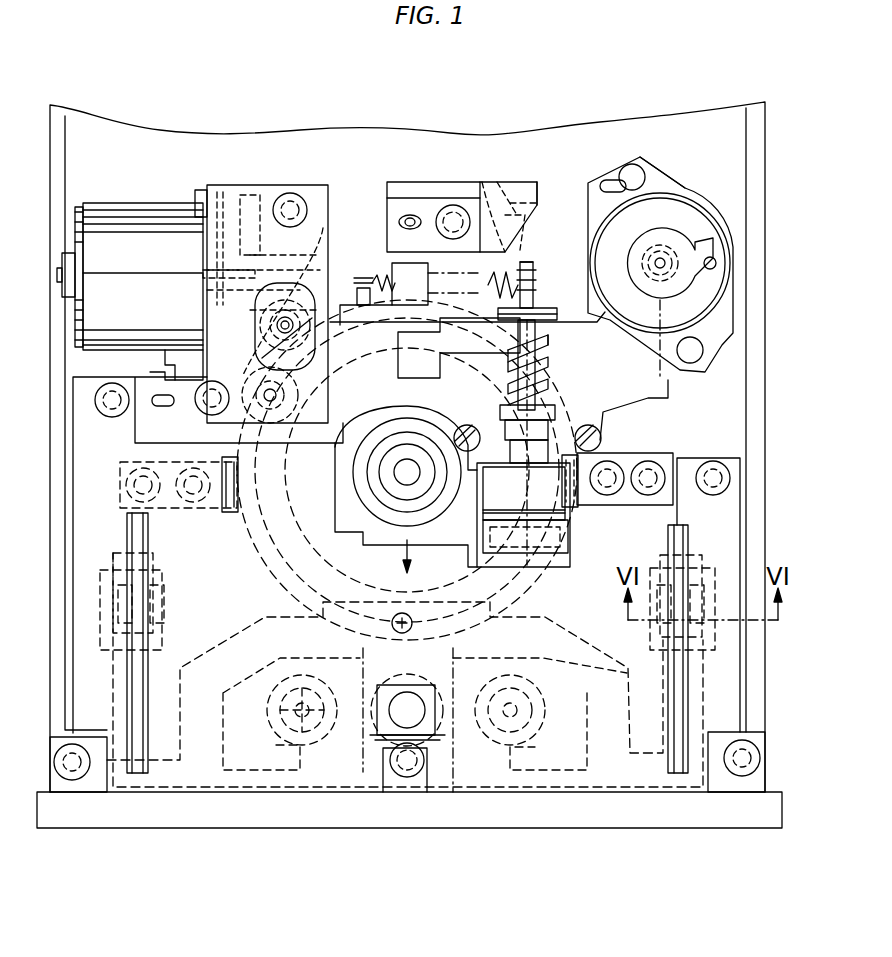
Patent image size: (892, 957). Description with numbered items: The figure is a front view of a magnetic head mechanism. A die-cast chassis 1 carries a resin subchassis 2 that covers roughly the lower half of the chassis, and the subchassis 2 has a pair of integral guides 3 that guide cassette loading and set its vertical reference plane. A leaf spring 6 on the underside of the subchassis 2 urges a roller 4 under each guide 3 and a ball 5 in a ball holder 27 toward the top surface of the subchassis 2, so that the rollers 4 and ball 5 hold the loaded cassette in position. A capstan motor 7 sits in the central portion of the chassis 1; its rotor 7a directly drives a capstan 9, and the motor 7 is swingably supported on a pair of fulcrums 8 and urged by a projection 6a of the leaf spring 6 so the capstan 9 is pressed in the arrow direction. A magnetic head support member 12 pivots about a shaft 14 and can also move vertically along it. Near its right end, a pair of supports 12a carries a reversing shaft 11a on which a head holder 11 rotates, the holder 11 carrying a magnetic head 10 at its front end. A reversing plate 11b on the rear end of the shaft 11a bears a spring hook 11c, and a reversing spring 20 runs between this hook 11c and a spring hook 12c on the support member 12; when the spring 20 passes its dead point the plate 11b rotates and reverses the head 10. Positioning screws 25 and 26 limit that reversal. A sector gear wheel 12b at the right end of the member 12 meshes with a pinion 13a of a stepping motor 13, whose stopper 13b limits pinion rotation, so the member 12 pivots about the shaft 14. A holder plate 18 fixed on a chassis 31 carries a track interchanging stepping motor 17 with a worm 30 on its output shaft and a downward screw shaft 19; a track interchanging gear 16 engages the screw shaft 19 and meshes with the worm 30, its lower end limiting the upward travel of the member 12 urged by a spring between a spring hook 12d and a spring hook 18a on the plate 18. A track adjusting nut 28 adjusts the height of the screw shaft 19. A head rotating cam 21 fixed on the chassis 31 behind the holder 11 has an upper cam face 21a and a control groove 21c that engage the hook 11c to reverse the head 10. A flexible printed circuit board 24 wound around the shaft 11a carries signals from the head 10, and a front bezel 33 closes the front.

The chassis 1 is at (716, 110).
The subchassis 2 is at (723, 705).
The guides 3 is at (137, 775).
The roller 4 is at (135, 556).
The ball 5 is at (420, 702).
The leaf spring 6 is at (580, 683).
The projection 6a is at (414, 623).
The capstan motor 7 is at (262, 597).
The rotor 7a is at (262, 560).
The fulcrums 8 is at (255, 487).
The capstan 9 is at (357, 472).
The magnetic head 10 is at (530, 553).
The head holder 11 is at (483, 545).
The reversing shaft 11a is at (536, 335).
The reversing plate 11b is at (533, 285).
The spring hook 11c is at (530, 262).
The magnetic head support member 12 is at (648, 404).
The supports 12a is at (545, 322).
The sector gear wheel 12b is at (675, 383).
The spring hook 12c is at (358, 272).
The spring hook 12d is at (140, 415).
The stepping motor 13 is at (655, 203).
The pinion 13a is at (653, 203).
The stopper 13b is at (713, 255).
The shaft 14 is at (276, 395).
The track interchanging gear 16 is at (197, 297).
The track interchanging stepping motor 17 is at (118, 213).
The holder plate 18 is at (275, 188).
The spring hook 18a is at (180, 365).
The screw shaft 19 is at (300, 327).
The reversing spring 20 is at (512, 282).
The head rotating cam 21 is at (437, 180).
The upper cam face 21a is at (537, 205).
The control groove 21c is at (520, 195).
The flexible printed circuit board 24 is at (548, 358).
The positioning screw 25 is at (458, 428).
The positioning screw 26 is at (598, 444).
The ball holder 27 is at (322, 732).
The track adjusting nut 28 is at (260, 305).
The worm 30 is at (323, 228).
The chassis 31 is at (214, 190).
The front bezel 33 is at (330, 822).